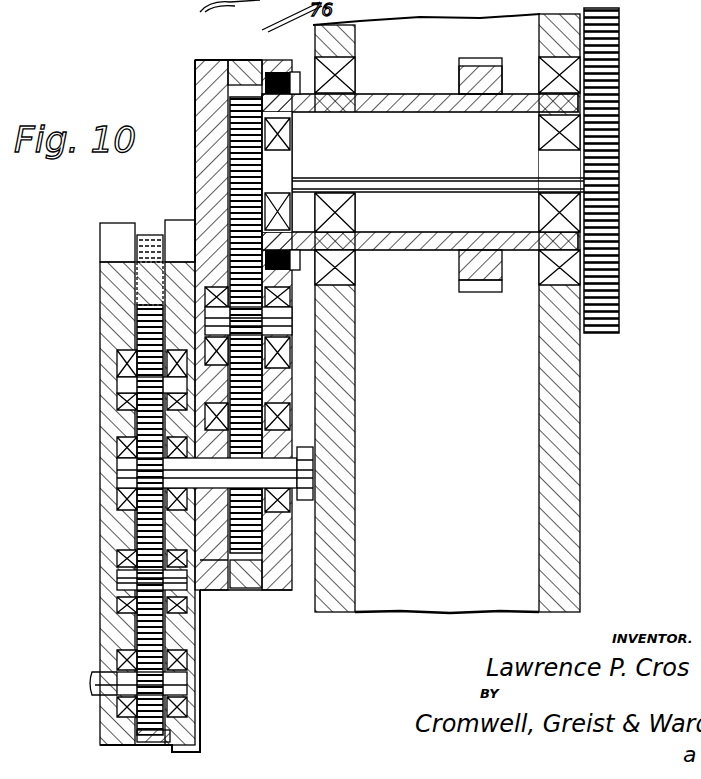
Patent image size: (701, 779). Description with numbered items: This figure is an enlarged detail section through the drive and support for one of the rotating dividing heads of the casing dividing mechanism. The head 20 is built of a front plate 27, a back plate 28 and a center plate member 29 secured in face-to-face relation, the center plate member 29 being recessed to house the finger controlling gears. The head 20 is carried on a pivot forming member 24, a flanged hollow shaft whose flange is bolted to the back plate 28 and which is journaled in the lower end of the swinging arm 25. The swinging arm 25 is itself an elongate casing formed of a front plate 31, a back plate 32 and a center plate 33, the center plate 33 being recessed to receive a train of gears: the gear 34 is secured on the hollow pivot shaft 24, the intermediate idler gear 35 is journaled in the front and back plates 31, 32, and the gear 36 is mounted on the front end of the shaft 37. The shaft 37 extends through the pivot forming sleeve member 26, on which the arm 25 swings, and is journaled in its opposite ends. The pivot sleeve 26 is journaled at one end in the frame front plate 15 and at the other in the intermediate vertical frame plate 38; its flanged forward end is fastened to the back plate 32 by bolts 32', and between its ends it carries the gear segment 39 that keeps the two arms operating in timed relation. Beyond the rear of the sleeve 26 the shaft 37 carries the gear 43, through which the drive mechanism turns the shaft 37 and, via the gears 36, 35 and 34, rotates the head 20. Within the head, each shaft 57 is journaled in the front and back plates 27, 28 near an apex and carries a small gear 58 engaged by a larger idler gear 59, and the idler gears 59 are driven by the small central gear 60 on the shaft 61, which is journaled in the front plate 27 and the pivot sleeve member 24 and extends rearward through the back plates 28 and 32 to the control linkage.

The front wall forming plate 15 is at (345, 440).
The head 20 is at (100, 418).
The pivot forming member 24 is at (222, 565).
The swinging arm 25 is at (195, 147).
The pivot forming sleeve member 26 is at (400, 250).
The front plate 27 is at (100, 333).
The back plate 28 is at (182, 260).
The center plate member 29 is at (135, 290).
The front plate 31 is at (195, 76).
The back plate 32 is at (327, 325).
The bolts 32' is at (305, 151).
The center plate 33 is at (234, 60).
The gear 34 is at (252, 556).
The intermediate idler gear 35 is at (262, 333).
The gear 36 is at (240, 205).
The shaft 37 is at (410, 158).
The intermediate vertically extending frame plate 38 is at (575, 411).
The gear segment 39 is at (459, 60).
The gear 43 is at (619, 163).
The shaft 57 is at (100, 675).
The small gear 58 is at (138, 718).
The idler gear 59 is at (150, 582).
The central gear 60 is at (140, 507).
The shaft 61 is at (175, 465).